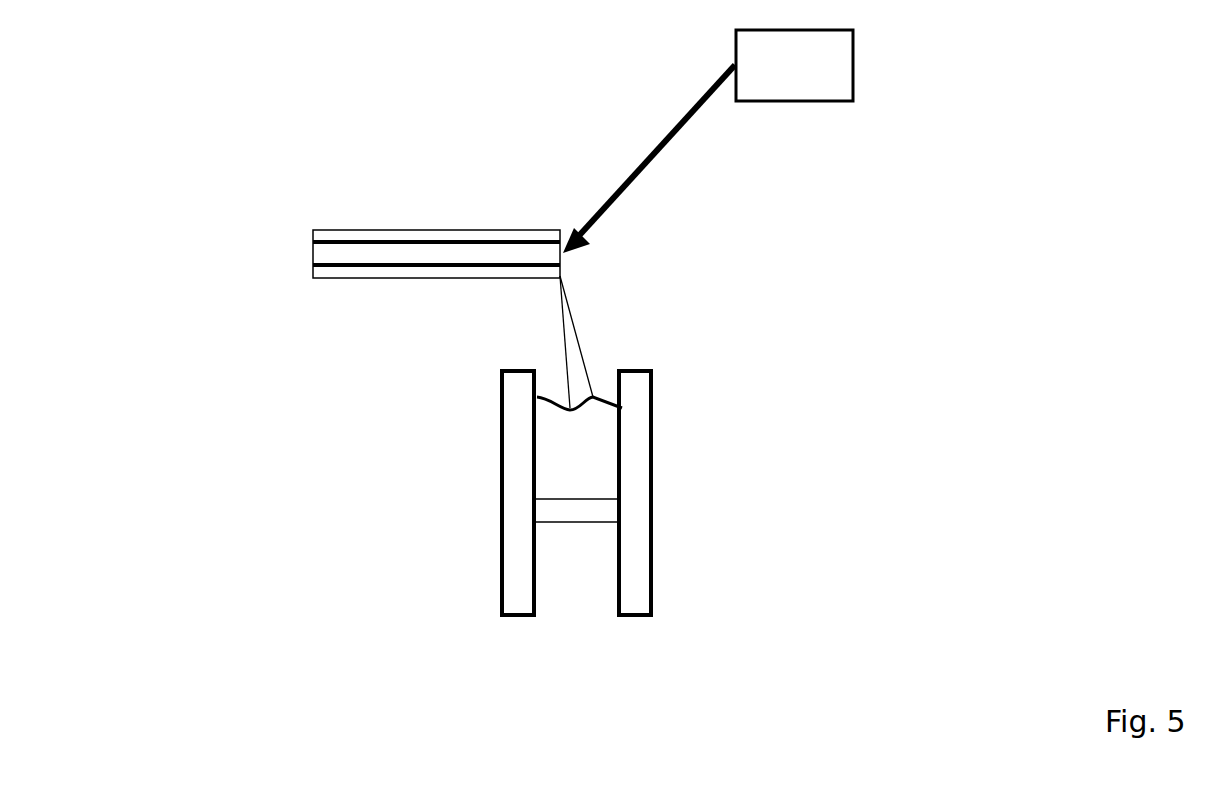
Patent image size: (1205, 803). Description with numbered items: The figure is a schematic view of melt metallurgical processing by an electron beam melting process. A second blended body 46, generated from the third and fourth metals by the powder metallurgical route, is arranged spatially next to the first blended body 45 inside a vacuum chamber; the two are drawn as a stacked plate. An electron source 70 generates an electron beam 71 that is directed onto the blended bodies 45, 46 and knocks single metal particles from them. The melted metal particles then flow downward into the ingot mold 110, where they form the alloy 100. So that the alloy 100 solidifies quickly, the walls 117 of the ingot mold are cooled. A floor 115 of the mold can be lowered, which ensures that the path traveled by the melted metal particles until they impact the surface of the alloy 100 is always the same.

The electron source 70 is at (830, 73).
The electron beam 71 is at (660, 147).
The first blended body 45 is at (382, 230).
The second blended body 46 is at (322, 253).
The ingot mold 110 is at (742, 374).
The walls of the ingot mold 117 is at (512, 463).
The alloy 100 is at (597, 441).
The floor 115 is at (572, 510).